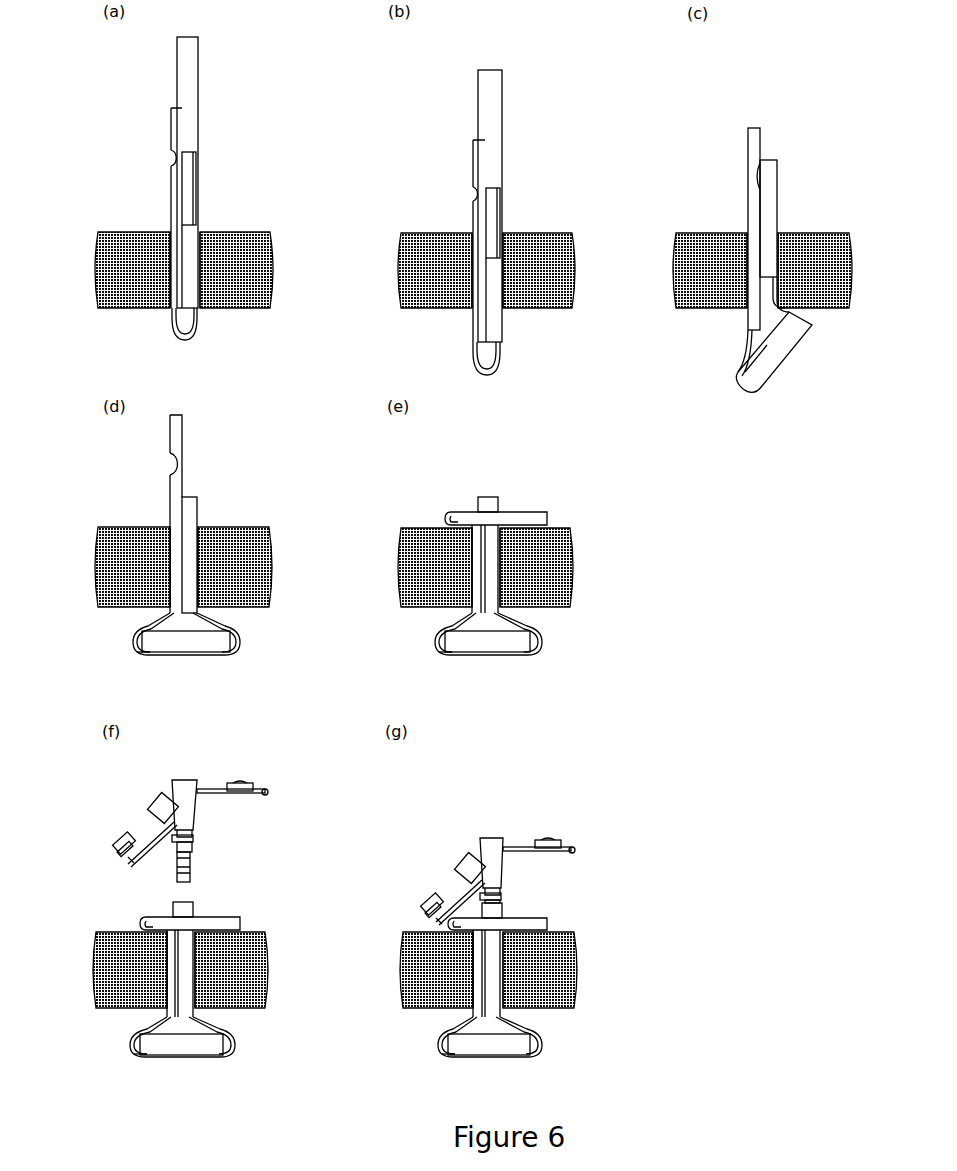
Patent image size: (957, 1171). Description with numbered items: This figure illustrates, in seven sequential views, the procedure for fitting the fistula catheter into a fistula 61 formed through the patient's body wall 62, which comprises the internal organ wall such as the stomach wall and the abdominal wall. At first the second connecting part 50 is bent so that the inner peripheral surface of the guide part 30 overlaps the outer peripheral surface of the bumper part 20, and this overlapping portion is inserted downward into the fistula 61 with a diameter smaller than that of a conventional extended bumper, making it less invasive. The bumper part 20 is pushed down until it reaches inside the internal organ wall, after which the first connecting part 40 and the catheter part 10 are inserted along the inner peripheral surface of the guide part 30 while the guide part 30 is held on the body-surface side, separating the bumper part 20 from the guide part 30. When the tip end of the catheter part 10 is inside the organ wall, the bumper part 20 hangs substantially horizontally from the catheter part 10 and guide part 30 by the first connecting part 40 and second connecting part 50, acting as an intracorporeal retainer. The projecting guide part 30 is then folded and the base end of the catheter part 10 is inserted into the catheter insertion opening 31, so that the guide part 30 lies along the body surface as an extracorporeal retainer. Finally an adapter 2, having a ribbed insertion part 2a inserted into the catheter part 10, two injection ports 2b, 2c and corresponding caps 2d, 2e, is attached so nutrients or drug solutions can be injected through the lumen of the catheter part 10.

The adapter 2 is at (234, 754).
The ribbed insertion part 2a is at (190, 865).
The injection port 2b is at (157, 806).
The injection port 2c is at (186, 780).
The cap 2d is at (120, 845).
The cap 2e is at (242, 784).
The catheter part 10 is at (200, 64).
The bumper part 20 is at (198, 232).
The guide part 30 is at (171, 185).
The catheter insertion opening 31 is at (172, 155).
The first connecting part 40 is at (198, 180).
The second connecting part 50 is at (194, 334).
The fistula 61 is at (169, 232).
The body wall 62 is at (123, 241).